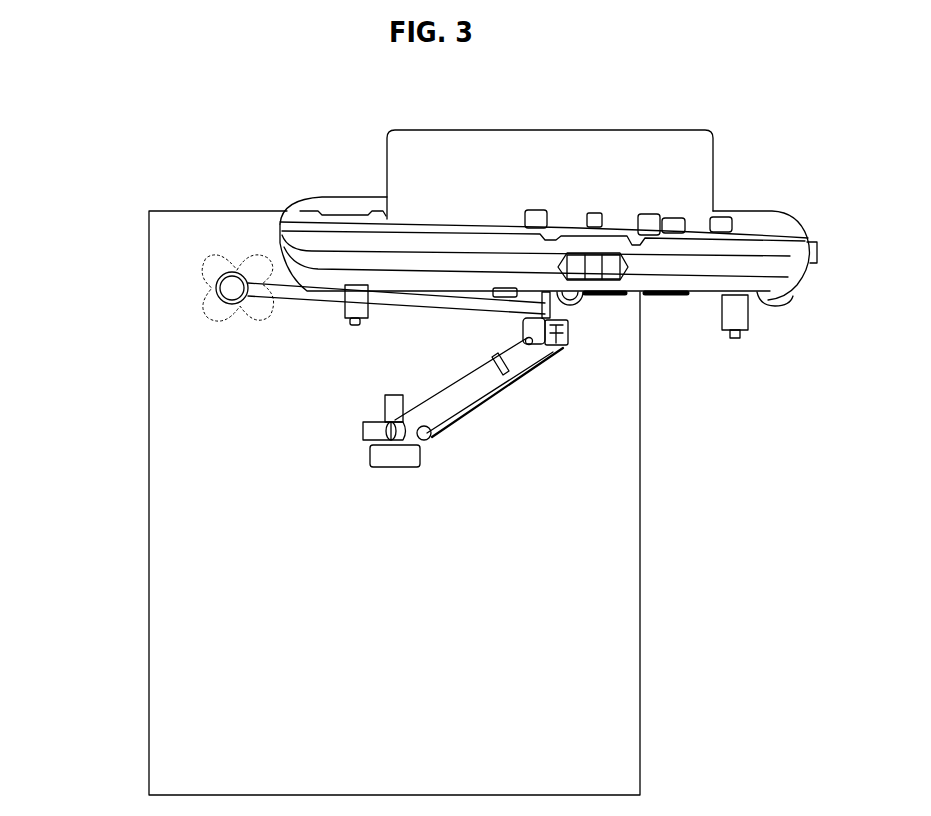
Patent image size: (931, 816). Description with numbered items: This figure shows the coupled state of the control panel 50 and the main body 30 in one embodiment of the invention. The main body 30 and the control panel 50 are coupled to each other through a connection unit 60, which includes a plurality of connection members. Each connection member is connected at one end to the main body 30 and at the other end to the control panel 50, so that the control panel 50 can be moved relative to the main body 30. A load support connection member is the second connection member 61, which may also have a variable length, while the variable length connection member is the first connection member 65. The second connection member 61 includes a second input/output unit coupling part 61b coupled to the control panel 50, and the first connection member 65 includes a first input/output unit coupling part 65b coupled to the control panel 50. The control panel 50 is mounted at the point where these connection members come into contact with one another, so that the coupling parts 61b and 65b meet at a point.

The main body 30 is at (682, 529).
The control panel 50 is at (788, 214).
The connection unit 60 is at (66, 413).
The second connection member 61 is at (213, 263).
The second input/output unit coupling part 61b is at (520, 288).
The first connection member 65 is at (438, 400).
The first input/output unit coupling part 65b is at (567, 318).